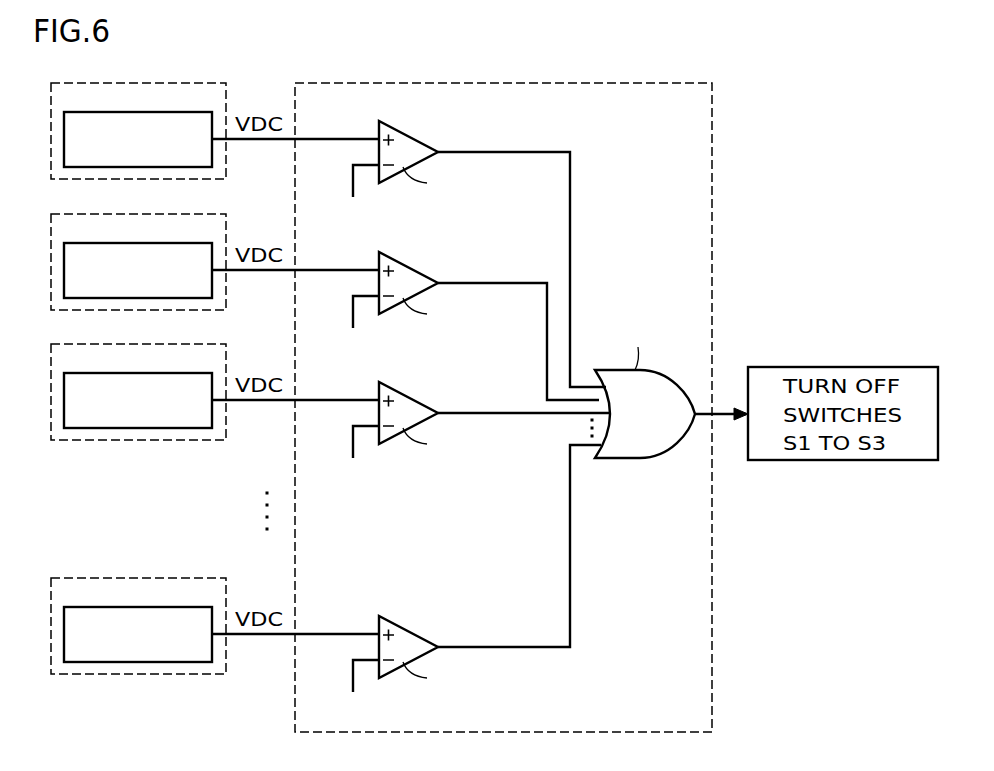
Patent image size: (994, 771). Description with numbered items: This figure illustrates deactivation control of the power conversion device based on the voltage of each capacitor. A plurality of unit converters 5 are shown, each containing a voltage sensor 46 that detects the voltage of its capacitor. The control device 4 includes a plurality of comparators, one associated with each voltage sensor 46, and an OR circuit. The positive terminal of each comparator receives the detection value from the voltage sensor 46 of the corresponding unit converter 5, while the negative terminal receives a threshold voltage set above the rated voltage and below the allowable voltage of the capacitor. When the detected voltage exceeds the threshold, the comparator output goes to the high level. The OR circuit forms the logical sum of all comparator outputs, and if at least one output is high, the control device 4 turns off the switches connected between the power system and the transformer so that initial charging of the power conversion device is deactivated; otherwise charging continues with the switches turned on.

The control device 4 is at (677, 83).
The unit converter 5 is at (196, 83).
The voltage sensor 46 is at (167, 112).